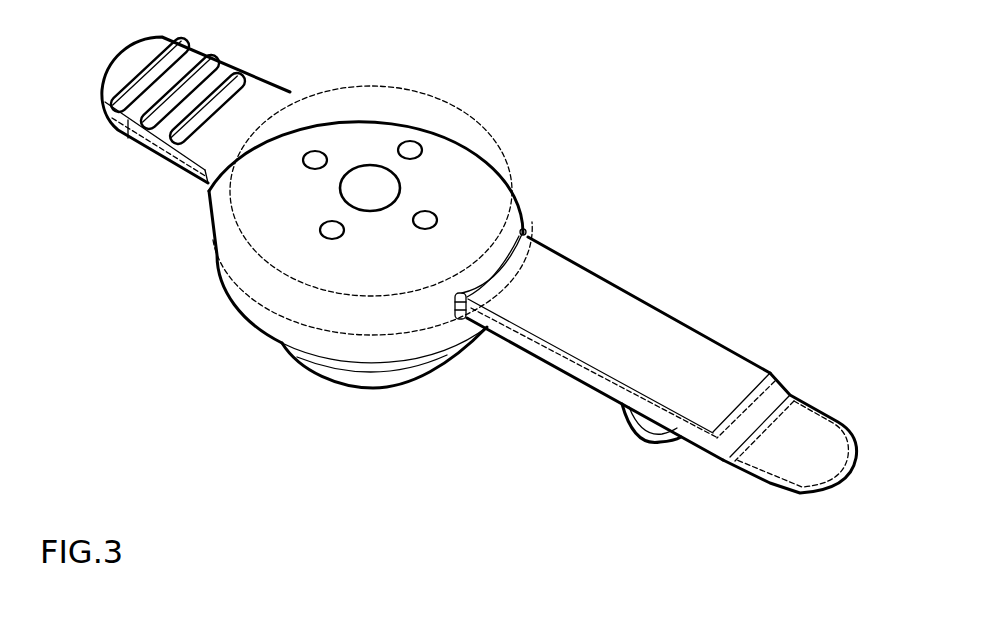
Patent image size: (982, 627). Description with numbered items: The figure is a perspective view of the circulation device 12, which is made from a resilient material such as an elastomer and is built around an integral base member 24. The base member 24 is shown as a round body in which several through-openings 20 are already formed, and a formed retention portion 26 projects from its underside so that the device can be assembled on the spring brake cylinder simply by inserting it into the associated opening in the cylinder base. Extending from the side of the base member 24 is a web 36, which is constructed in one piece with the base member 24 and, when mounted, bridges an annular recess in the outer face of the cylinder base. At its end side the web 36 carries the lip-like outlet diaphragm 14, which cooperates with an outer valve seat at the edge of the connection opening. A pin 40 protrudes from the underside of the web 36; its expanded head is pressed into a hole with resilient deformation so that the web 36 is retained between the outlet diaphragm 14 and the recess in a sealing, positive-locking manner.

The circulation device 12 is at (587, 86).
The outlet diaphragm 14 is at (817, 438).
The through-openings 20 is at (315, 151).
The base member 24 is at (493, 188).
The retention portion 26 is at (360, 380).
The web 36 is at (628, 316).
The pin 40 is at (650, 444).